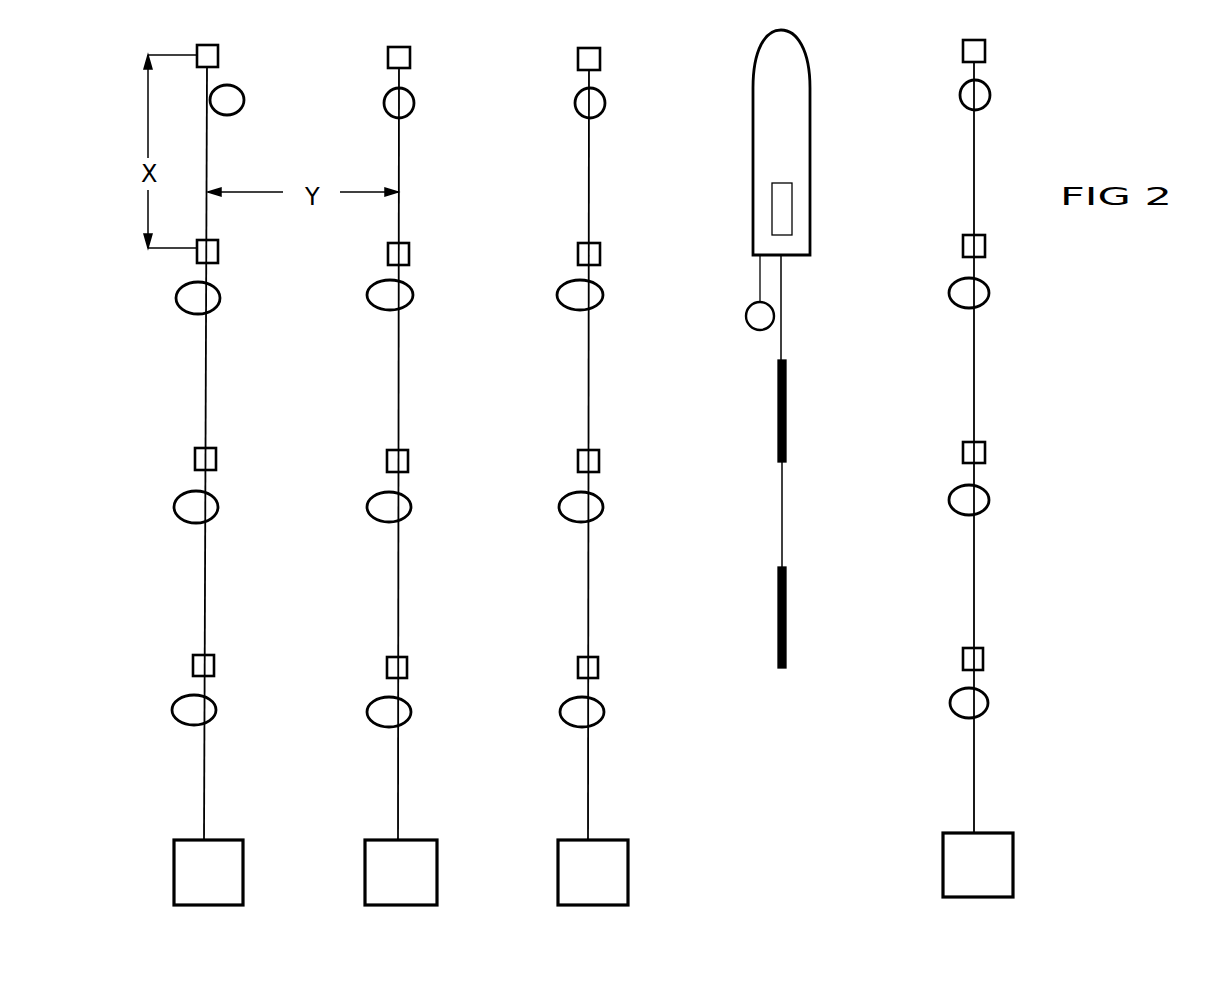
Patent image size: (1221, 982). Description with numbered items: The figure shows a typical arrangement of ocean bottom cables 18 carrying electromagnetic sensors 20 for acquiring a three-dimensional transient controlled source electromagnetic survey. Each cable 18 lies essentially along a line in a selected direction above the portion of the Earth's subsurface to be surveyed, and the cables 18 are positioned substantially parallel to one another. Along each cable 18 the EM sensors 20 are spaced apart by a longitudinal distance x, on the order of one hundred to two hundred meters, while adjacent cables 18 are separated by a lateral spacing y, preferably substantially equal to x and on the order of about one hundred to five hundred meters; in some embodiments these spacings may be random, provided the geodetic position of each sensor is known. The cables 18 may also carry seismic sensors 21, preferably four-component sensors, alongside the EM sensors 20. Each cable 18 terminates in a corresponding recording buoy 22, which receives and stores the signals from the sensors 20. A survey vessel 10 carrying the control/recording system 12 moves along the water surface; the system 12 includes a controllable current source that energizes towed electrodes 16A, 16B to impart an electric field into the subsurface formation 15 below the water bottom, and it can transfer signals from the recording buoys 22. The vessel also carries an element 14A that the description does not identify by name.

The survey vessel 10 is at (810, 122).
The control/recording system 12 is at (792, 225).
The cable 14A is at (781, 278).
The subsurface formation 15 is at (747, 332).
The electrode 16A is at (786, 405).
The electrode 16B is at (786, 612).
The ocean bottom cable 18 is at (207, 357).
The electromagnetic sensor 20 is at (217, 60).
The seismic sensor 21 is at (207, 115).
The recording buoy 22 is at (243, 843).